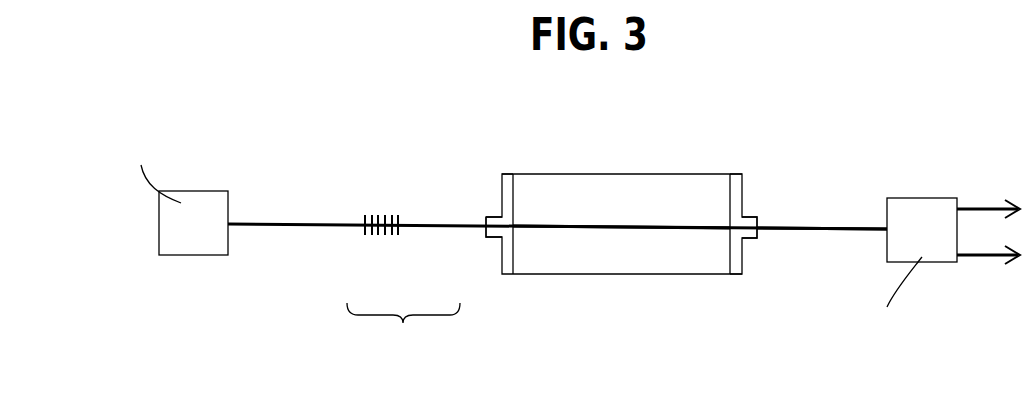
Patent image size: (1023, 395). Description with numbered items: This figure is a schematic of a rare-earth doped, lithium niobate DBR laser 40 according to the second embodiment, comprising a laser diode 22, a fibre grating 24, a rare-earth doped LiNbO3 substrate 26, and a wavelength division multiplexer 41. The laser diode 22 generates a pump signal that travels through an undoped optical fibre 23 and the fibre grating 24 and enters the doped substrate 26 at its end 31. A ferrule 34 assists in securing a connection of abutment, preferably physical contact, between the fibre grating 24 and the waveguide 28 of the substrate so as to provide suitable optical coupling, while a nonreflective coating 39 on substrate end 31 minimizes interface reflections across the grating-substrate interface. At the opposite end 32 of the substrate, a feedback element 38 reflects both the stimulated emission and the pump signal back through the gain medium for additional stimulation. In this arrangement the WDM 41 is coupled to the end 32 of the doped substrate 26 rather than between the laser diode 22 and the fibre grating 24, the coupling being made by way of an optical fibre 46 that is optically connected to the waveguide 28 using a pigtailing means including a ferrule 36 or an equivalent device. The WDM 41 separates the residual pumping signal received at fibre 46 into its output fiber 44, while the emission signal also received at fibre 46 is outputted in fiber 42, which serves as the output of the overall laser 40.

The laser 40 is at (257, 105).
The laser diode 22 is at (175, 256).
The undoped optical fibre 23 is at (317, 223).
The fibre grating 24 is at (378, 237).
The substrate end 31 is at (497, 247).
The rare-earth doped LiNbO3 substrate 26 is at (675, 267).
The waveguide 28 is at (567, 225).
The ferrule 34 is at (497, 215).
The nonreflective coating 39 is at (508, 172).
The feedback element 38 is at (737, 180).
The ferrule 36 is at (752, 215).
The substrate end 32 is at (743, 269).
The optical fibre 46 is at (865, 233).
The wavelength division multiplexer 41 is at (907, 198).
The output fibre 42 is at (992, 205).
The output fiber 44 is at (977, 260).